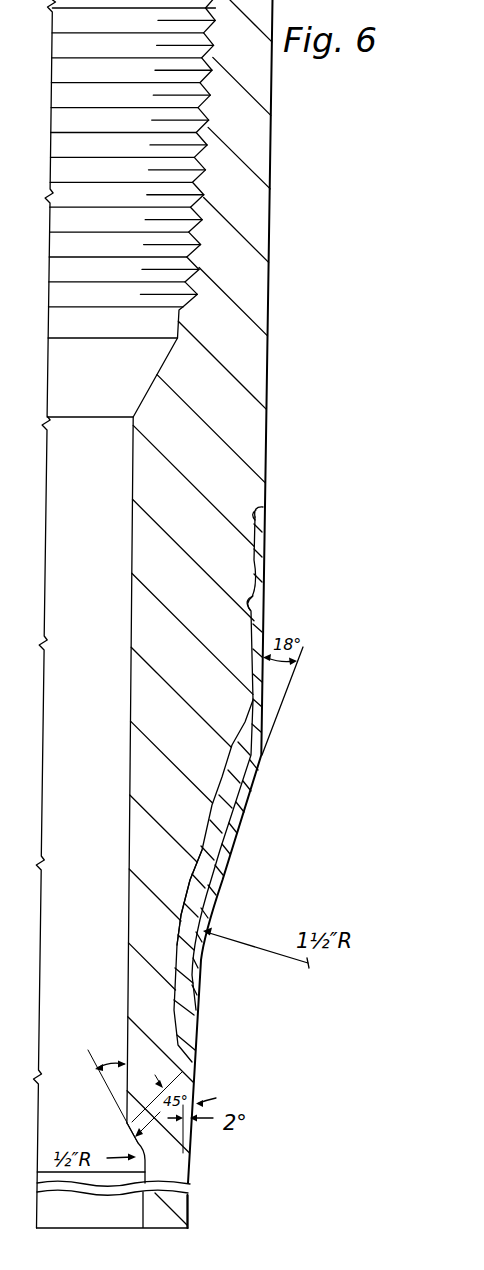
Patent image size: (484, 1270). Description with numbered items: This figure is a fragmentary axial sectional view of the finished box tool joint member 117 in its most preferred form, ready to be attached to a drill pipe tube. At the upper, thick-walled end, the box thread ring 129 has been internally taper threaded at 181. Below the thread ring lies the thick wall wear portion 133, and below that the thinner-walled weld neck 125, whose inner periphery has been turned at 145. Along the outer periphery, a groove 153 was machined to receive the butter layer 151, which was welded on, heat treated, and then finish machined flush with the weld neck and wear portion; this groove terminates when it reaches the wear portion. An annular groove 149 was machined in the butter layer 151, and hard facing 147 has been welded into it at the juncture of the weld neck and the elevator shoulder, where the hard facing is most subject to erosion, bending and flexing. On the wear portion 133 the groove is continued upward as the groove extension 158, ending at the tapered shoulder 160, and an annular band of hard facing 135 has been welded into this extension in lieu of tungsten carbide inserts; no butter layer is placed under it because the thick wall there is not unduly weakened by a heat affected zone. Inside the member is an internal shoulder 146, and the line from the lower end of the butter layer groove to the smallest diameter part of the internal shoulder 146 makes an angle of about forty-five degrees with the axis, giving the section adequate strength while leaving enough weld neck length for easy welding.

The box tool joint member 117 is at (268, 308).
The internal taper threads 181 is at (202, 188).
The box thread ring 129 is at (239, 253).
The wear portion 133 is at (184, 462).
The hard facing 135 is at (266, 575).
The tapered shoulder 160 is at (264, 507).
The groove extension 158 is at (246, 601).
The groove 153 is at (220, 793).
The annular groove 149 is at (231, 816).
The butter layer 151 is at (208, 842).
The hard facing 147 is at (212, 867).
The internal shoulder 146 is at (123, 1127).
The weld neck 125 is at (165, 1177).
The inner periphery of weld neck 145 is at (142, 1206).